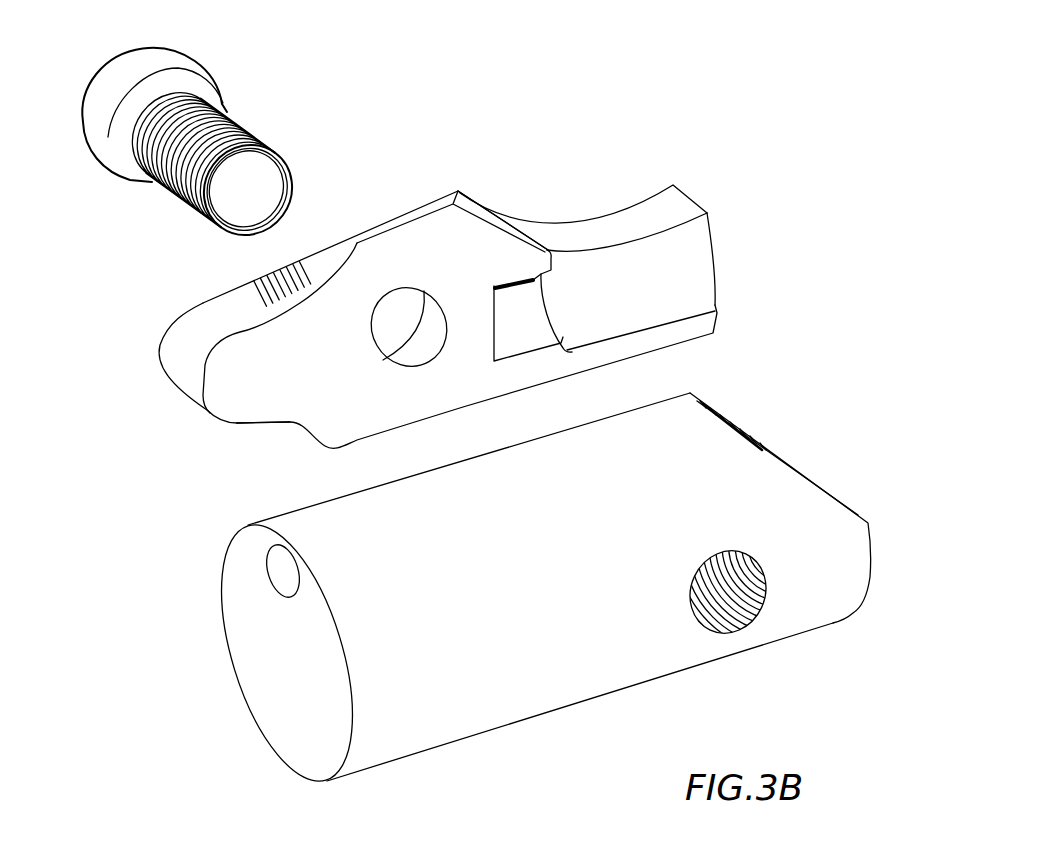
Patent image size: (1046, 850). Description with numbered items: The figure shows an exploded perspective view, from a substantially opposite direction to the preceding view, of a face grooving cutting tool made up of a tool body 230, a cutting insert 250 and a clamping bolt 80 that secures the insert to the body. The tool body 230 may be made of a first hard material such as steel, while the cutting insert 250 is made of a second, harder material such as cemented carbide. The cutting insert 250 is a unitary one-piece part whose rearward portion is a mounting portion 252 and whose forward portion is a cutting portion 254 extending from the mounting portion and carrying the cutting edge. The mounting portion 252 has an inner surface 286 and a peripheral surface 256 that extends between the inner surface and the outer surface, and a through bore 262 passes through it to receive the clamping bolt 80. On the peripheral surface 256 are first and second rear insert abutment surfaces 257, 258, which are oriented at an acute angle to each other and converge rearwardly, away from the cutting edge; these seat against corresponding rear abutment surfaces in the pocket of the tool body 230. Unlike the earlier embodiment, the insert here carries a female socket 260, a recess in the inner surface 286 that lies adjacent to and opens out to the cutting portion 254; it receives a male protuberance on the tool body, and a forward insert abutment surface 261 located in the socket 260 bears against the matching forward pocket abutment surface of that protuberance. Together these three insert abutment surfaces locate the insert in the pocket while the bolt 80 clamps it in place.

The clamping bolt 80 is at (261, 96).
The tool body 230 is at (190, 623).
The cutting insert 250 is at (159, 401).
The mounting portion 252 is at (398, 188).
The cutting portion 254 is at (566, 174).
The peripheral surface 256 is at (198, 291).
The first rear insert abutment surface 257 is at (280, 267).
The second rear insert abutment surface 258 is at (240, 423).
The female socket 260 is at (530, 317).
The forward insert abutment surface 261 is at (518, 287).
The through bore 262 is at (417, 343).
The inner surface 286 is at (314, 381).